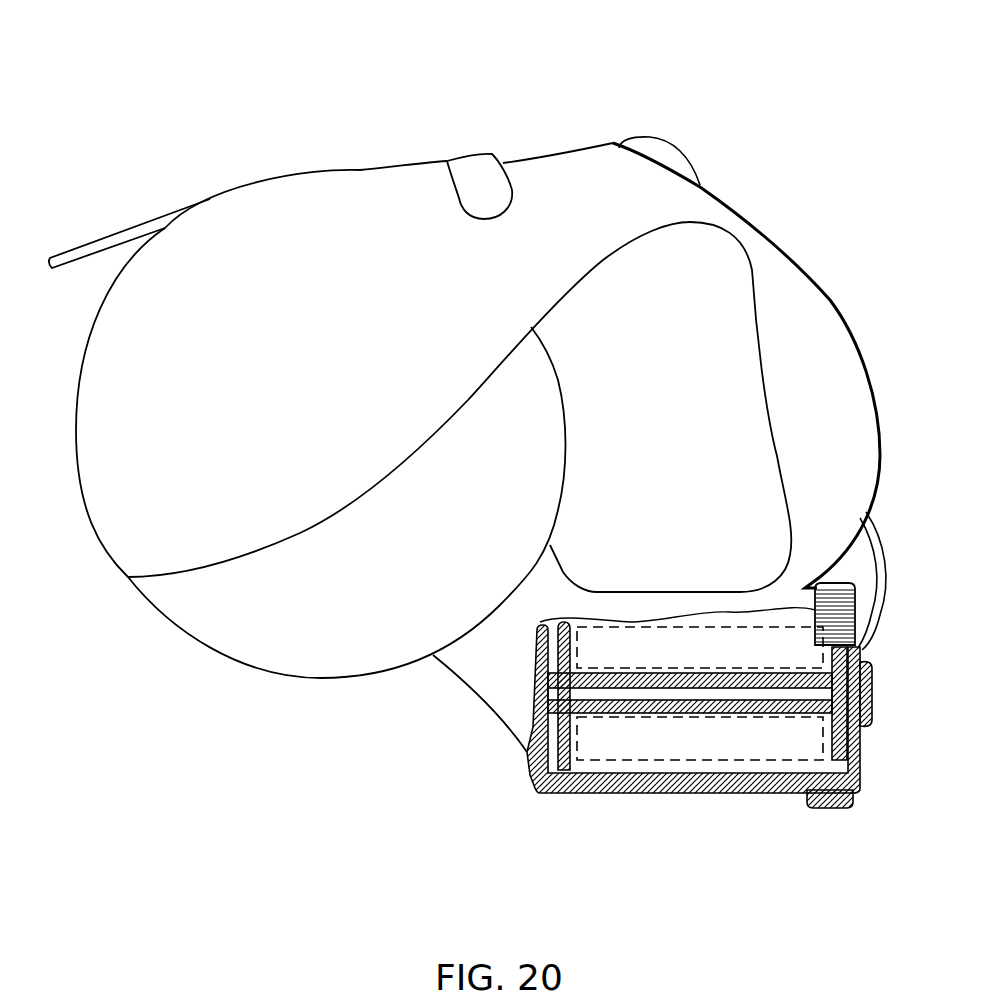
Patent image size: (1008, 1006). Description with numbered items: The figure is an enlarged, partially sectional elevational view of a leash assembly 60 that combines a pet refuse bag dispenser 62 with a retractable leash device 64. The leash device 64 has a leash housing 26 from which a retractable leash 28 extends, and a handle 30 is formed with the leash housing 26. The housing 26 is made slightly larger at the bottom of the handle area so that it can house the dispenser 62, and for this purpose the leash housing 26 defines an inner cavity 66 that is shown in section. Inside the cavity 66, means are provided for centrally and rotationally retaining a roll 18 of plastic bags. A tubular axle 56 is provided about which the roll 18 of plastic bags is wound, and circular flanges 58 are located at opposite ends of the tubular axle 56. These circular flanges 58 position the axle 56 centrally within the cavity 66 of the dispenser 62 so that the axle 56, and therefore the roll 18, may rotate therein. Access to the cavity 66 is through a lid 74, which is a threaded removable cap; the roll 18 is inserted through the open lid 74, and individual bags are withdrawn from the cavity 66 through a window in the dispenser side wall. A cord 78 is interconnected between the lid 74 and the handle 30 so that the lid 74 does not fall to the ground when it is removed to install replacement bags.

The leash assembly 60 is at (276, 58).
The retractable leash 28 is at (132, 223).
The handle 30 is at (794, 274).
The retractable leash device 64 is at (85, 491).
The leash housing 26 is at (170, 620).
The cord 78 is at (886, 562).
The lid 74 is at (858, 606).
The pet refuse bag dispenser 62 is at (862, 763).
The circular flanges 58 is at (557, 795).
The inner cavity 66 is at (618, 767).
The roll of plastic bags 18 is at (680, 743).
The tubular axle 56 is at (733, 712).